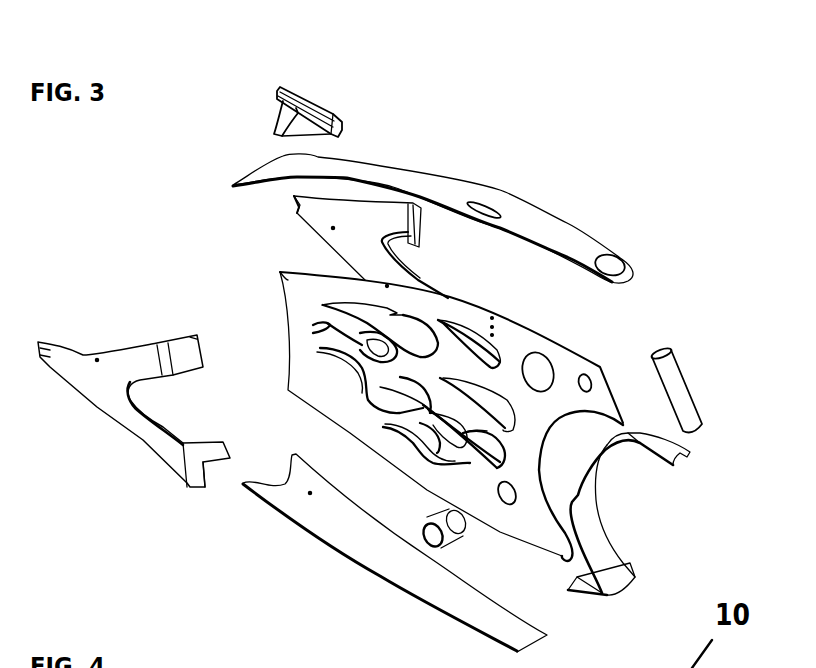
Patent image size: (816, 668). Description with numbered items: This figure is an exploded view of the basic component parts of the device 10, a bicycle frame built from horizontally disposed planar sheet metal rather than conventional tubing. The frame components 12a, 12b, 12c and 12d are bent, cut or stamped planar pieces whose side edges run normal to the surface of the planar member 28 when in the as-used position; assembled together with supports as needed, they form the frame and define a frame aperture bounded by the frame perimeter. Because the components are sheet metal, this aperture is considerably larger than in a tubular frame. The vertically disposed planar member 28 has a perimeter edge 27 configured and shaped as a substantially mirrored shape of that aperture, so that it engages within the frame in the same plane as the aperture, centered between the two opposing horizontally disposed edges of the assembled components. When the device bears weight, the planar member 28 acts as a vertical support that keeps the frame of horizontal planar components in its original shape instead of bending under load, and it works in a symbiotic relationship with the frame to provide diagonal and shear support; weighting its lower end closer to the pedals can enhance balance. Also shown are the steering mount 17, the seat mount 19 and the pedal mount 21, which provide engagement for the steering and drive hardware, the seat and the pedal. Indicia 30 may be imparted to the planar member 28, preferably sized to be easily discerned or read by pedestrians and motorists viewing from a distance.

The vehicle body accessory assembly 10 is at (604, 136).
The frame component 12a is at (446, 176).
The frame component 12b is at (600, 598).
The frame component 12c is at (298, 525).
The frame component 12d is at (301, 209).
The pin 17 is at (688, 381).
The seat mount 19 is at (334, 109).
The pedal mount 21 is at (426, 530).
The perimeter edge 27 is at (570, 347).
The planar member 28 is at (312, 375).
The indicia 30 is at (322, 325).